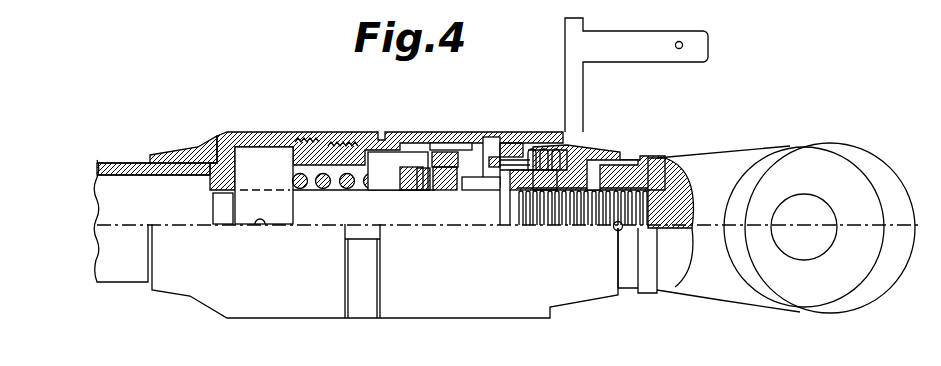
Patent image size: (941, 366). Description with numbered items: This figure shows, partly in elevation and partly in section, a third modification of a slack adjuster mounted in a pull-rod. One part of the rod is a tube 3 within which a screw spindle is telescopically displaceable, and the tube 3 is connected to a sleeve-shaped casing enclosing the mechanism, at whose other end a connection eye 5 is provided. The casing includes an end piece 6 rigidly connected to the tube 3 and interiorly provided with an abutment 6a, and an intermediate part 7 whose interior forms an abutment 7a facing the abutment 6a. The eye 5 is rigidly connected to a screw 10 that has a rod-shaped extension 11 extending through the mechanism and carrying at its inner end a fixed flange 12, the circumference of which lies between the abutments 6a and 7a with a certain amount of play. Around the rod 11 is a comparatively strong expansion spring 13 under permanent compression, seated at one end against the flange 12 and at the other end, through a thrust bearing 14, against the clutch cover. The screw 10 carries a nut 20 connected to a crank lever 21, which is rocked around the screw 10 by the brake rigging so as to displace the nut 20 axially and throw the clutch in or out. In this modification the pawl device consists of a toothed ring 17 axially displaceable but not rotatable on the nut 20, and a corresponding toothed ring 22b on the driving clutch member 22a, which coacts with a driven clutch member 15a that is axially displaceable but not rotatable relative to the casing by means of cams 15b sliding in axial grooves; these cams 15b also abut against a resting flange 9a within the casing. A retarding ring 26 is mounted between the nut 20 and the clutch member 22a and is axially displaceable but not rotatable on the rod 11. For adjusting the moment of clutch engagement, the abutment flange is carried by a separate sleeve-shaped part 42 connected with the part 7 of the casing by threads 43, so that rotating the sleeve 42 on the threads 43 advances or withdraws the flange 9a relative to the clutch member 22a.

The tube 3 is at (127, 162).
The connection eye 5 is at (727, 164).
The end piece 6 is at (245, 134).
The abutment 6a is at (215, 142).
The intermediate part 7 is at (348, 141).
The abutment 7a is at (300, 138).
The resting flange 9a is at (501, 146).
The screw 10 is at (583, 230).
The rod-shaped extension 11 is at (446, 225).
The fixed flange 12 is at (233, 197).
The expansion spring 13 is at (333, 198).
The thrust bearing 14 is at (430, 217).
The driven clutch member 15a is at (452, 144).
The cams 15b is at (431, 143).
The toothed ring 17 is at (563, 123).
The nut 20 is at (578, 162).
The crank lever 21 is at (564, 56).
The driving clutch member 22a is at (471, 178).
The toothed ring 22b is at (540, 148).
The retarding ring 26 is at (495, 195).
The sleeve-shaped part 42 is at (489, 136).
The threads 43 is at (398, 150).